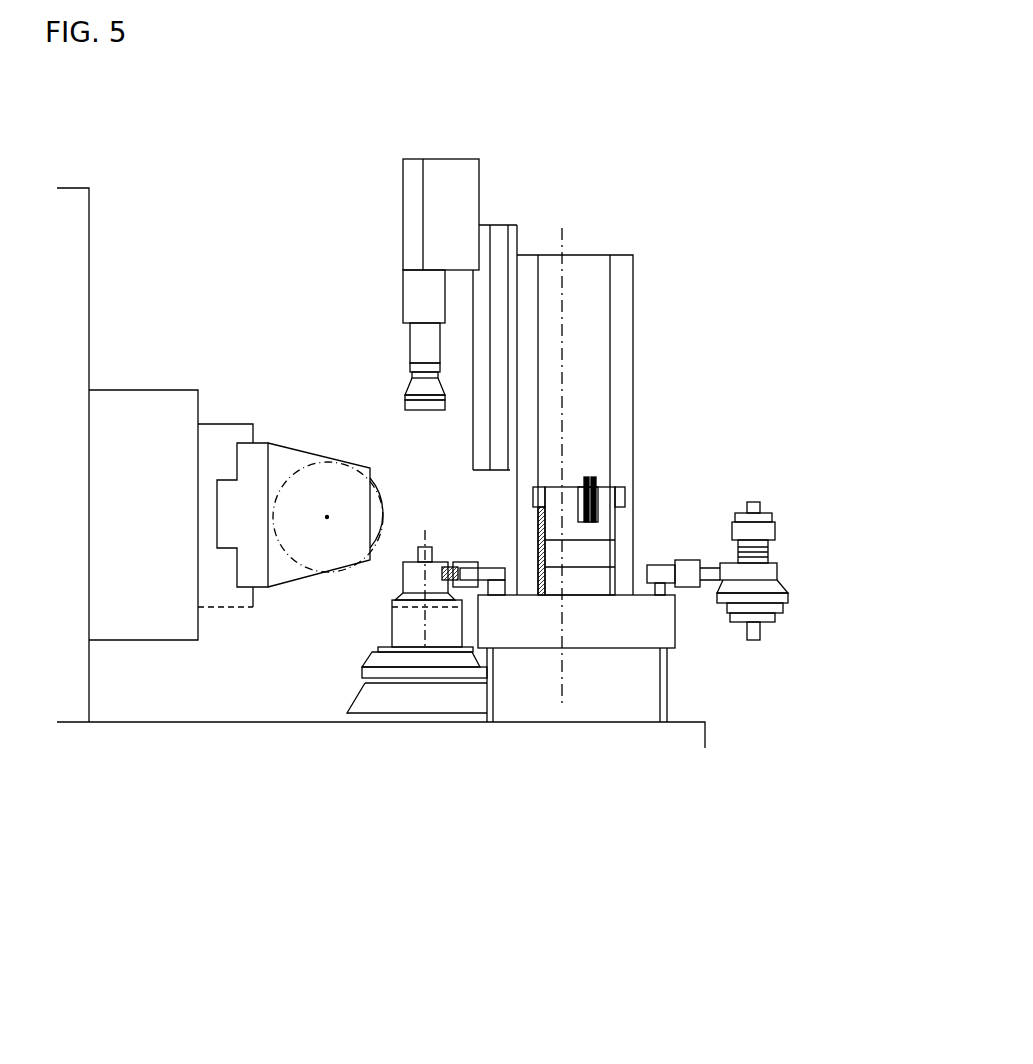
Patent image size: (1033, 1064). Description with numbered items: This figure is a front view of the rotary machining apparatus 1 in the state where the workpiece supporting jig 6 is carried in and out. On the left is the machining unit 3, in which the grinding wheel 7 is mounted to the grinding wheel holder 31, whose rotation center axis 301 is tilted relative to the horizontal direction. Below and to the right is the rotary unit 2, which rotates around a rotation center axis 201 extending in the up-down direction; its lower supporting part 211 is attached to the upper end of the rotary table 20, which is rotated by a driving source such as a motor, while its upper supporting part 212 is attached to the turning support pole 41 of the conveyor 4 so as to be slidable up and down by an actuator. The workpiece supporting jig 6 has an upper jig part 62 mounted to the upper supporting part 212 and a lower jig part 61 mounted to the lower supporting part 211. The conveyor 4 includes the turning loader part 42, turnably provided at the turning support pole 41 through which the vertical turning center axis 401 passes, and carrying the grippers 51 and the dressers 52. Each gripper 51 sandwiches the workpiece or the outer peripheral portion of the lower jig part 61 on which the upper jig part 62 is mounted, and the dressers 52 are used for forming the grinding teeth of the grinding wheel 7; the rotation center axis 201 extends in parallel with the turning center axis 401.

The rotary machining apparatus 1 is at (657, 185).
The rotary unit 2 is at (448, 730).
The machining unit 3 is at (228, 400).
The conveyor 4 is at (643, 353).
The workpiece supporting jig 6 is at (752, 657).
The grinding wheel 7 is at (372, 525).
The rotary table 20 is at (377, 693).
The grinding wheel holder 31 is at (325, 478).
The turning support pole 41 is at (593, 313).
The turning loader part 42 is at (612, 620).
The gripper 51 is at (468, 555).
The dresser 52 is at (600, 470).
The lower jig part 61 is at (767, 627).
The upper jig part 62 is at (757, 533).
The rotation center axis 201 is at (423, 690).
The lower supporting part 211 is at (400, 618).
The upper supporting part 212 is at (438, 215).
The rotation center axis 301 is at (327, 517).
The turning center axis 401 is at (563, 707).